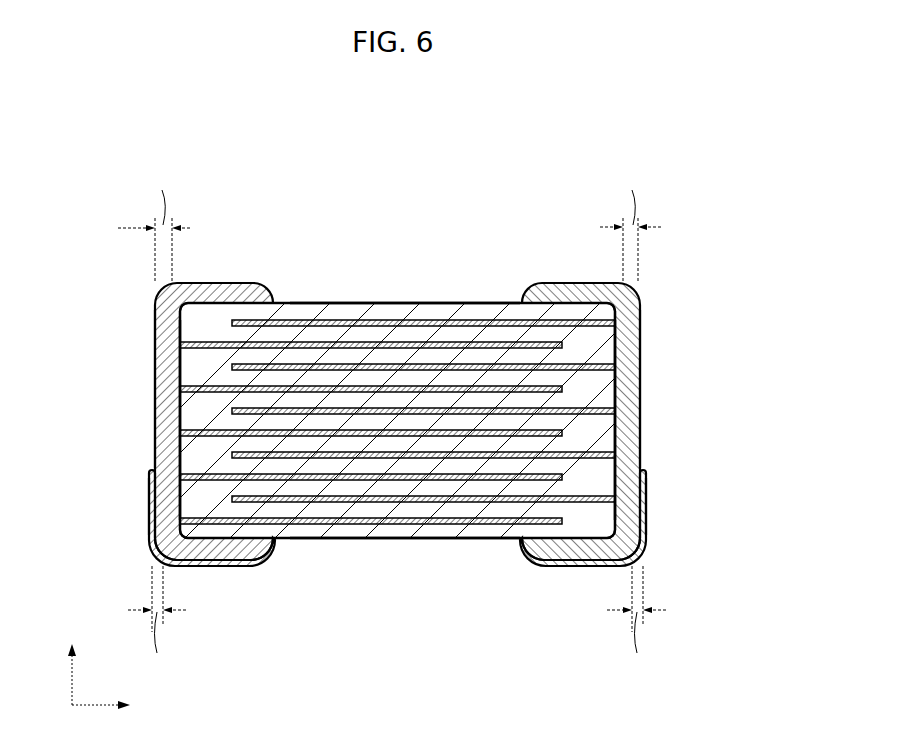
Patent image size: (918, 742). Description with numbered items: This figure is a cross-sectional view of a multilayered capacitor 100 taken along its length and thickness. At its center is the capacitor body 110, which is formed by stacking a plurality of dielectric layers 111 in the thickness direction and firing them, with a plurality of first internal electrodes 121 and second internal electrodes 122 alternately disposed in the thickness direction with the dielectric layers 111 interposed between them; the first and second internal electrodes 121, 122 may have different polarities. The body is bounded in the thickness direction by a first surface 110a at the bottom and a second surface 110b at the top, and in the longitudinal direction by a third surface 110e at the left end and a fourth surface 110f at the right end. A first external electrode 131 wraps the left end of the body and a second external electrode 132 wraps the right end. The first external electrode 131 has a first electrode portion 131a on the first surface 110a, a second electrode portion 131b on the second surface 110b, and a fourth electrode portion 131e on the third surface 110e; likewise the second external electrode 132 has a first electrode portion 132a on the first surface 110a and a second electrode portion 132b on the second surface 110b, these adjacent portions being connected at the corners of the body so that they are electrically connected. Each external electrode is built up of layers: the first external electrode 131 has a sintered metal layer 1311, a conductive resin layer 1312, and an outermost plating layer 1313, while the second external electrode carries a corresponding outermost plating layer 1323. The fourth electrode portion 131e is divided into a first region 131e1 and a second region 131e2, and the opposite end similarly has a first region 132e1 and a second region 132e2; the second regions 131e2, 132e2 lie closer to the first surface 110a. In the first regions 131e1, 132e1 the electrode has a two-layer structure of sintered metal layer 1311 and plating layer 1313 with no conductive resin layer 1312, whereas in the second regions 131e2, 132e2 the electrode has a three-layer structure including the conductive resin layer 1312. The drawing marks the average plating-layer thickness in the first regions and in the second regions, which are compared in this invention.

The multilayered capacitor 100 is at (550, 203).
The capacitor body 110 is at (392, 431).
The first surface 110a is at (472, 540).
The second surface 110b is at (462, 304).
The third surface 110e is at (179, 336).
The fourth surface 110f is at (617, 360).
The dielectric layer 111 is at (415, 318).
The first internal electrode 121 is at (427, 523).
The second internal electrode 122 is at (373, 358).
The first external electrode 131 is at (174, 419).
The sintered metal layer 1311 is at (160, 301).
The conductive resin layer 1312 is at (152, 546).
The plating layer 1313 is at (266, 286).
The first electrode portion 131a is at (228, 567).
The second electrode portion 131b is at (218, 282).
The fourth electrode portion 131e is at (98, 422).
The first region 131e1 is at (160, 413).
The second region 131e2 is at (120, 506).
The second external electrode 132 is at (631, 440).
The plating layer 1323 is at (530, 289).
The first electrode portion 132a is at (553, 567).
The second electrode portion 132b is at (583, 289).
The first region 132e1 is at (641, 413).
The second region 132e2 is at (647, 500).